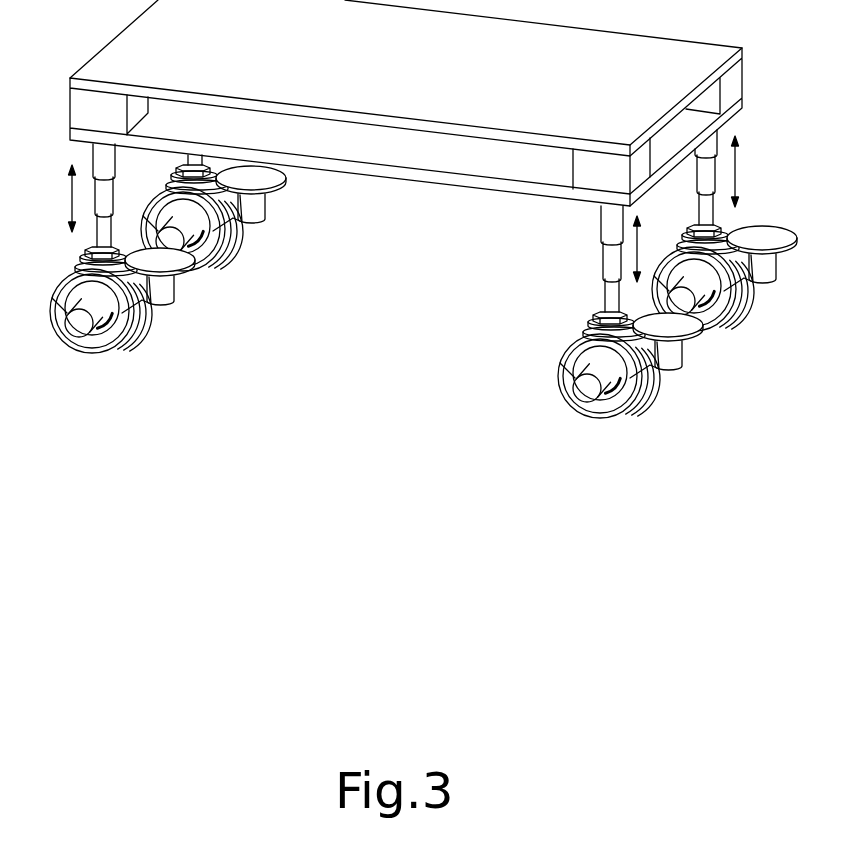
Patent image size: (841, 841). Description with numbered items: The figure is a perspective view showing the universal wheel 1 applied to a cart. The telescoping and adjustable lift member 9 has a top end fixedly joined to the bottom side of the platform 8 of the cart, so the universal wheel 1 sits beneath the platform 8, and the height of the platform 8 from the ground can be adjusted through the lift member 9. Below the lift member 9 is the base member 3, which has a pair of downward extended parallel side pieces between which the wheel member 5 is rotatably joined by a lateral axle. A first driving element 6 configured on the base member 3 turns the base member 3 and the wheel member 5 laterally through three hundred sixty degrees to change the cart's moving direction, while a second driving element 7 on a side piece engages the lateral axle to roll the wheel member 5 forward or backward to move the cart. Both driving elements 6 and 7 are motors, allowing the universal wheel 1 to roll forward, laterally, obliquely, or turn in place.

The universal wheel 1 is at (625, 415).
The base member 3 is at (571, 359).
The wheel member 5 is at (611, 423).
The first driving element 6 is at (702, 381).
The second driving element 7 is at (580, 430).
The platform 8 is at (418, 175).
The lift member 9 is at (608, 227).